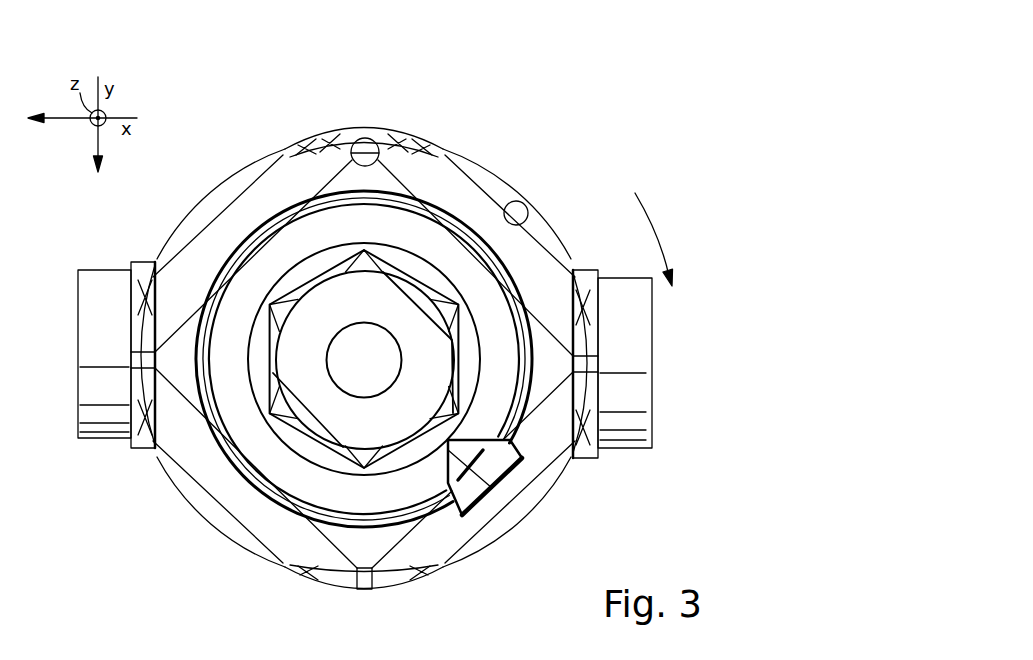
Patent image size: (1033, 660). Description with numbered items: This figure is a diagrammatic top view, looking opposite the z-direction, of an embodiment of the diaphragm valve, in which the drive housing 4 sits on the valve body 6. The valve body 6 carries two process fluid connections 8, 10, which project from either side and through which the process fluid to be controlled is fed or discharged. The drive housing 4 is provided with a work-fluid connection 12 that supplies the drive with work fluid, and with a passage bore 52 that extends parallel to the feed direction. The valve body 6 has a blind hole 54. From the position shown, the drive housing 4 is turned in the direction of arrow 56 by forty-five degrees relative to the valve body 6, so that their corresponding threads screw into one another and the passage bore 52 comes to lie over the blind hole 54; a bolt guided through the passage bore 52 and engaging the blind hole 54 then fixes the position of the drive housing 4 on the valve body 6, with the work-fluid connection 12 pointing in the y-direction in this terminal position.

The drive housing 4 is at (255, 202).
The valve body 6 is at (485, 154).
The process fluid connection 8 is at (103, 413).
The process fluid connection 10 is at (630, 397).
The work-fluid connection 12 is at (485, 477).
The passage bore 52 is at (364, 128).
The blind hole 54 is at (520, 201).
The arrow 56 is at (648, 212).